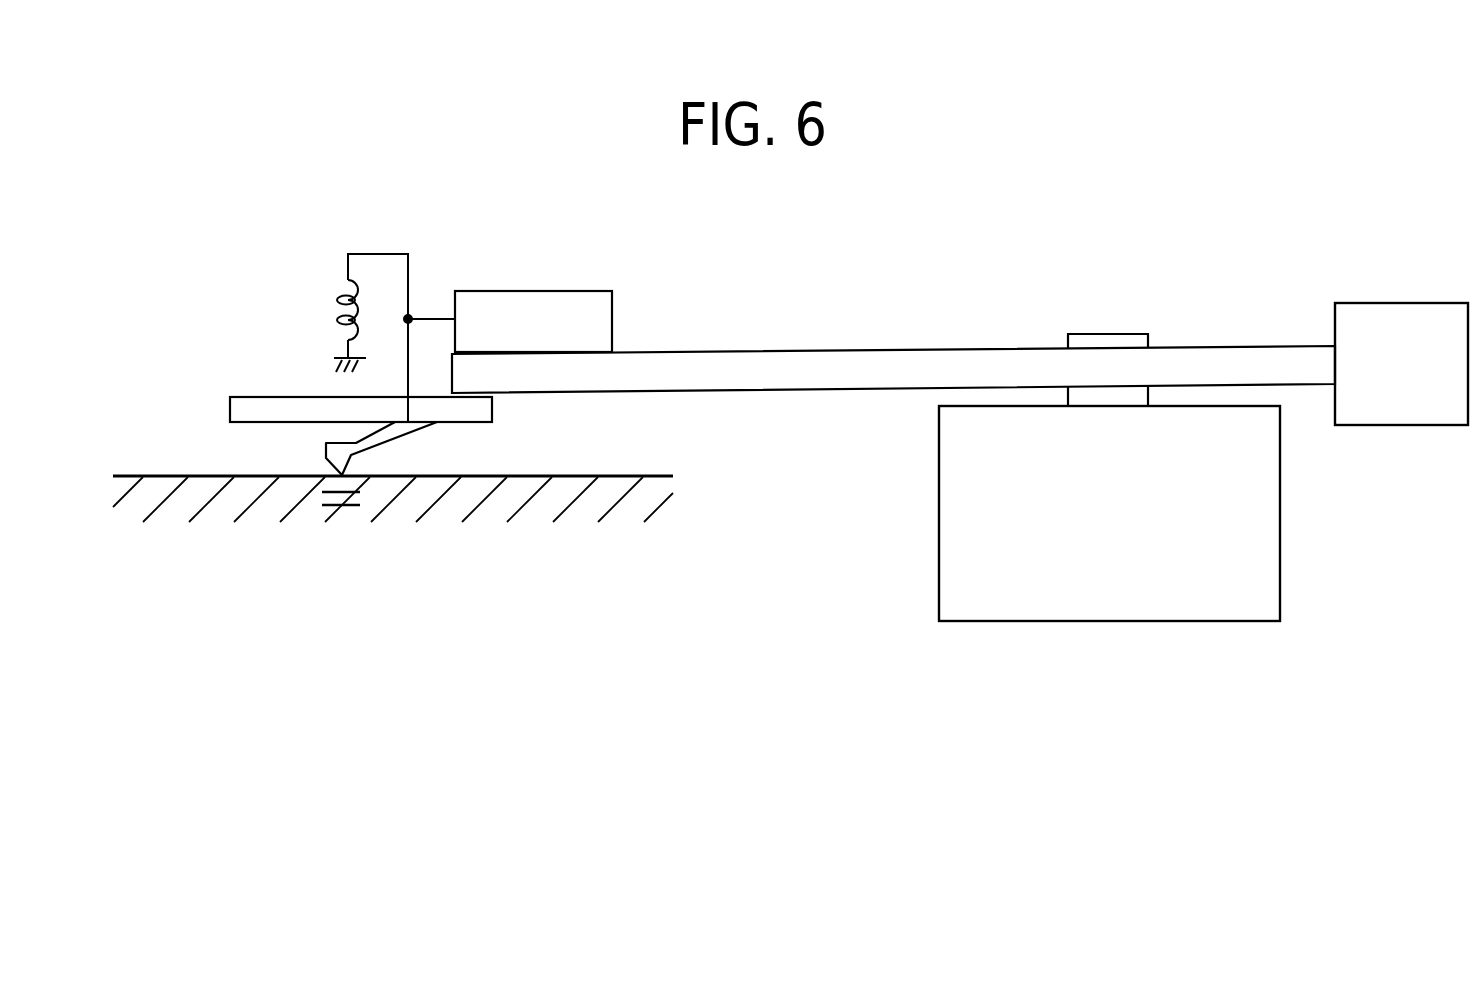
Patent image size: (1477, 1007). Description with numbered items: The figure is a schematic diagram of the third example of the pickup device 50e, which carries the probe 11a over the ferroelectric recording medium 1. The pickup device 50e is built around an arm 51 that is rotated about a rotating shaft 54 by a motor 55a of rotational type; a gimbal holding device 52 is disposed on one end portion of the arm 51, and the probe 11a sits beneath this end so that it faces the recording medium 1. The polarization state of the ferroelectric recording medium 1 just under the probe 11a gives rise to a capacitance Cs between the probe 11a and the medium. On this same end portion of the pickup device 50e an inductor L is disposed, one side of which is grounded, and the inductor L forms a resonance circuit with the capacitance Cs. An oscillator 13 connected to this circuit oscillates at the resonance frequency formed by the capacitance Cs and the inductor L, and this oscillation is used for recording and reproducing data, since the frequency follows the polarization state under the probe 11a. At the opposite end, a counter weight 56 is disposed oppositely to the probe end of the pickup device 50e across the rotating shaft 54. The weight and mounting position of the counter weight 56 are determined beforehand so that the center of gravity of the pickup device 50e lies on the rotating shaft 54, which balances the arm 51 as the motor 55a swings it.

The ferroelectric recording medium 1 is at (493, 507).
The capacitance Cs is at (340, 511).
The probe 11a is at (326, 457).
The gimbal holding device 52 is at (270, 399).
The inductor L is at (338, 300).
The oscillator 13 is at (540, 291).
The arm 51 is at (809, 352).
The rotating shaft 54 is at (1110, 334).
The motor 55a is at (1110, 622).
The counter weight 56 is at (1411, 303).
The pickup device 50e is at (786, 733).